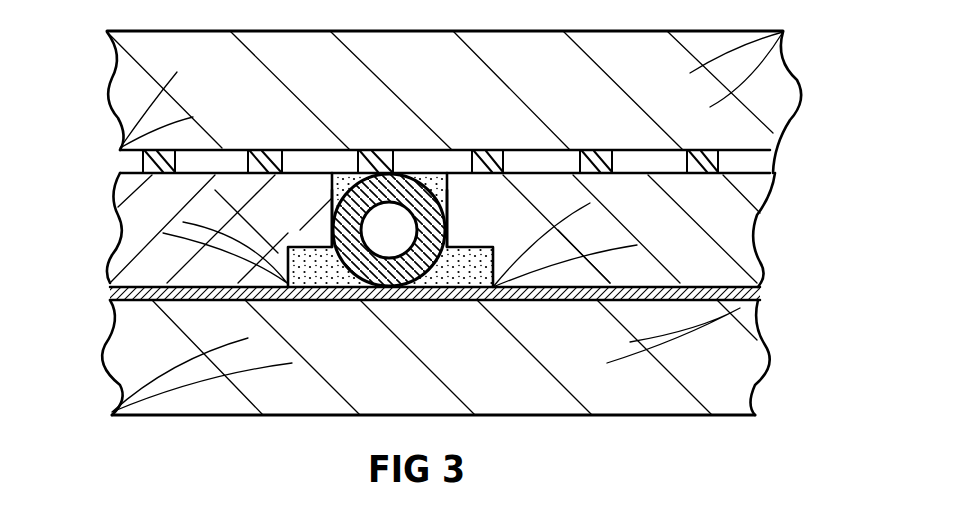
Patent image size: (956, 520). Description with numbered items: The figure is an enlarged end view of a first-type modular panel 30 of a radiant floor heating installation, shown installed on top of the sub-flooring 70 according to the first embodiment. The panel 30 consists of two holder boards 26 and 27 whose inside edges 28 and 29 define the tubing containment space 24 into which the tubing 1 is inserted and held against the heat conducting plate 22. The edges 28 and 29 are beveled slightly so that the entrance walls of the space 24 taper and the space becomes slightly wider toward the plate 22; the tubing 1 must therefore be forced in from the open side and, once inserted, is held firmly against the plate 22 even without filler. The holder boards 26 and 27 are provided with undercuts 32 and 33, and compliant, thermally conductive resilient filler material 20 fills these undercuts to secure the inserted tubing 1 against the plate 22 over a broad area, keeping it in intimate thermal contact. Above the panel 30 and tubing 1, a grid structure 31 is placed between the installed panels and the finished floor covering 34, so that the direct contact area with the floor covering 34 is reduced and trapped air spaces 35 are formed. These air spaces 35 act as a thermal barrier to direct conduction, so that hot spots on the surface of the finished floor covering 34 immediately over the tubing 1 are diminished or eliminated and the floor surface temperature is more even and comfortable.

The tubing 1 is at (398, 188).
The resilient filler material 20 is at (340, 183).
The plate 22 is at (395, 300).
The tubing containment space 24 is at (424, 138).
The holder board 26 is at (725, 238).
The holder board 27 is at (110, 240).
The beveled edge 28 is at (445, 230).
The beveled edge 29 is at (330, 222).
The modular panel 30 is at (93, 200).
The grid structure 31 is at (793, 160).
The undercut 32 is at (436, 357).
The undercut 33 is at (236, 357).
The finished floor covering 34 is at (104, 85).
The trapped air spaces 35 is at (237, 163).
The sub-flooring 70 is at (662, 416).